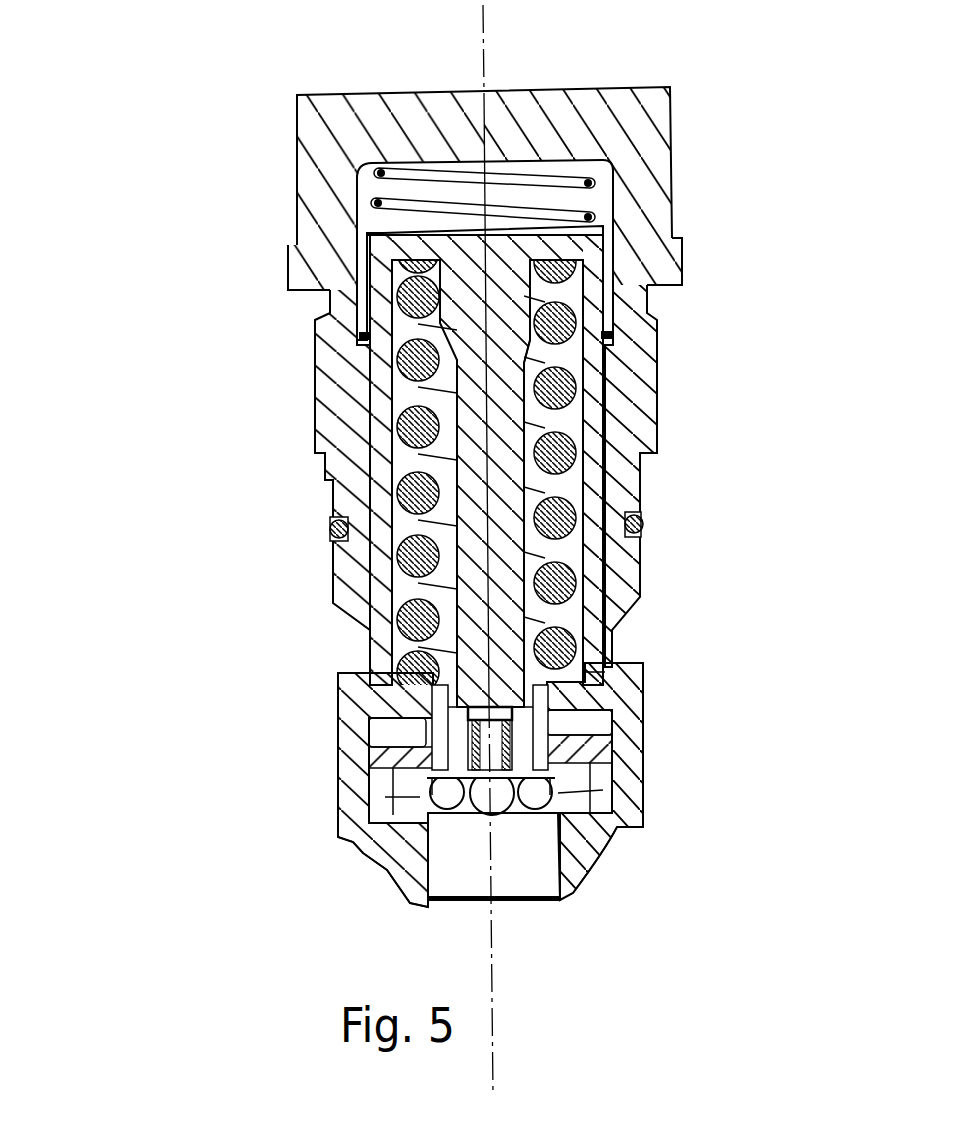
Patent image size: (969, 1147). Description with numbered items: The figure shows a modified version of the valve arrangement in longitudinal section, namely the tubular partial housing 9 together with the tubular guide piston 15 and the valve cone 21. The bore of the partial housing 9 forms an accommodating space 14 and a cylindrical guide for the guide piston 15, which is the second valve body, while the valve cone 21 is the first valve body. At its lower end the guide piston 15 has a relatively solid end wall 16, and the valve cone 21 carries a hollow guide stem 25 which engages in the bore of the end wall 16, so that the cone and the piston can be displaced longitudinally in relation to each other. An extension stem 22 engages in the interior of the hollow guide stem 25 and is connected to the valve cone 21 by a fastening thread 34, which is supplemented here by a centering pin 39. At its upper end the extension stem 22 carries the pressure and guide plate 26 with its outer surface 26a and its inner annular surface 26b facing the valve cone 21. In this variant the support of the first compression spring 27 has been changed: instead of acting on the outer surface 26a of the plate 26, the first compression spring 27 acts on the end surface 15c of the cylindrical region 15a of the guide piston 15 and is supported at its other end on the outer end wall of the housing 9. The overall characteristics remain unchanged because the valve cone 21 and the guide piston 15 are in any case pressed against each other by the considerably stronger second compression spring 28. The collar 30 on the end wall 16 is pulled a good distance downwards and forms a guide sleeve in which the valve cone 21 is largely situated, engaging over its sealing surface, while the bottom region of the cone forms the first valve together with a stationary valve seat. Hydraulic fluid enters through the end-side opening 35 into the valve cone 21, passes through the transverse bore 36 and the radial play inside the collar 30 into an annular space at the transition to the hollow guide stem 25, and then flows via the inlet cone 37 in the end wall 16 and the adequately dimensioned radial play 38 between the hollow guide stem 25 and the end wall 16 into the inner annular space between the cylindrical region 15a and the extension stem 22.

The tubular partial housing 9 is at (645, 122).
The accommodating space 14 is at (610, 272).
The tubular guide piston 15 is at (613, 623).
The cylindrical region 15a is at (382, 374).
The end surface 15c is at (358, 178).
The end wall 16 is at (560, 692).
The valve cone 21 is at (387, 882).
The extension stem 22 is at (460, 458).
The hollow guide stem 25 is at (613, 660).
The pressure and guide plate 26 is at (615, 237).
The outer surface 26a is at (436, 232).
The inner annular surface 26b is at (388, 233).
The first compression spring 27 is at (597, 208).
The second compression spring 28 is at (590, 407).
The collar 30 is at (353, 752).
The fastening thread 34 is at (577, 730).
The end-side opening 35 is at (547, 907).
The transverse bore 36 is at (415, 797).
The inlet cone 37 is at (390, 693).
The radial play 38 is at (393, 685).
The centering pin 39 is at (617, 827).